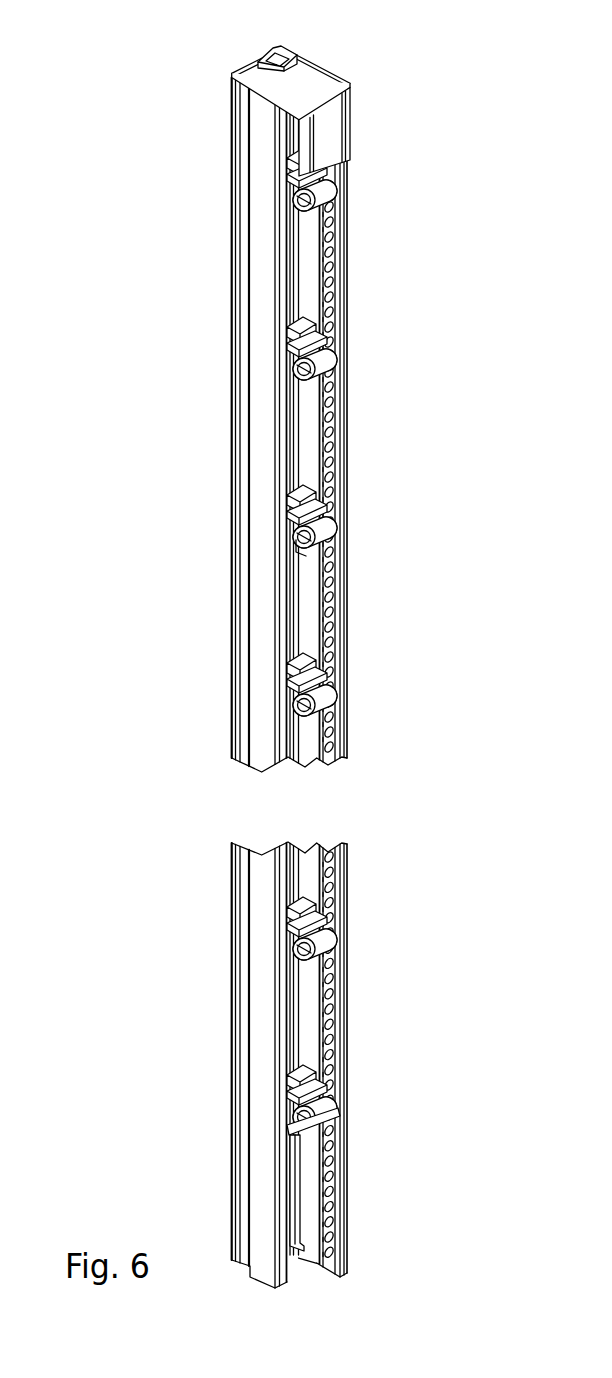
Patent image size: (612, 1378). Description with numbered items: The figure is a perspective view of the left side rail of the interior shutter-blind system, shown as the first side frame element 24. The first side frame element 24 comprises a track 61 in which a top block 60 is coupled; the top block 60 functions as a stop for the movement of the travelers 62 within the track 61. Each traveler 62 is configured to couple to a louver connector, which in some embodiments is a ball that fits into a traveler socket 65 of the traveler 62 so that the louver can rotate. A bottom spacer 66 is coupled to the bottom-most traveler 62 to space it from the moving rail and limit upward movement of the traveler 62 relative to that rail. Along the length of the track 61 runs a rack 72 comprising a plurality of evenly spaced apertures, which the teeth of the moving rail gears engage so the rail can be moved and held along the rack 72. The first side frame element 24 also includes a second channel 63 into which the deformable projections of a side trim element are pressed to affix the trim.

The first side frame element 24 is at (148, 60).
The top block 60 is at (330, 142).
The track 61 is at (303, 432).
The traveler 62 is at (335, 188).
The second channel 63 is at (238, 440).
The traveler socket 65 is at (300, 548).
The bottom spacer 66 is at (303, 1187).
The rack 72 is at (330, 1016).